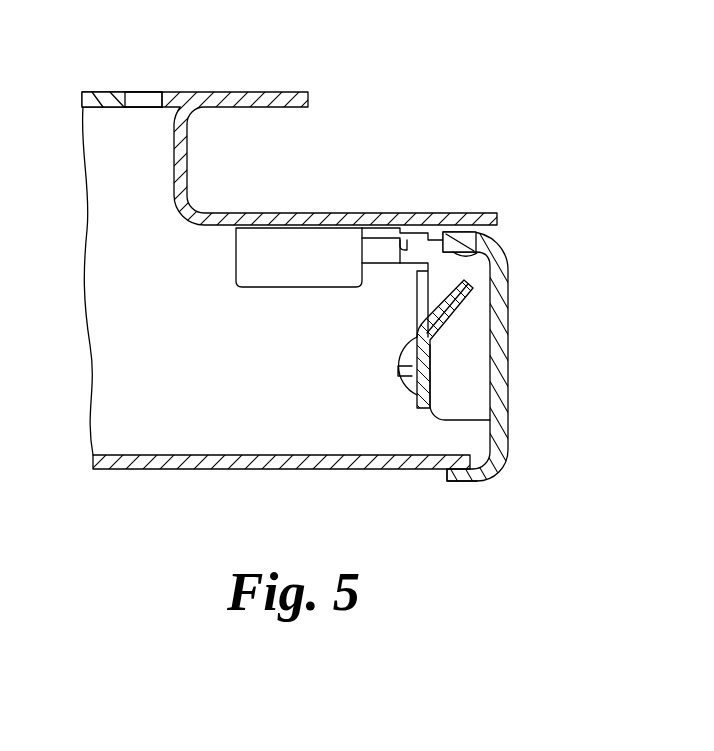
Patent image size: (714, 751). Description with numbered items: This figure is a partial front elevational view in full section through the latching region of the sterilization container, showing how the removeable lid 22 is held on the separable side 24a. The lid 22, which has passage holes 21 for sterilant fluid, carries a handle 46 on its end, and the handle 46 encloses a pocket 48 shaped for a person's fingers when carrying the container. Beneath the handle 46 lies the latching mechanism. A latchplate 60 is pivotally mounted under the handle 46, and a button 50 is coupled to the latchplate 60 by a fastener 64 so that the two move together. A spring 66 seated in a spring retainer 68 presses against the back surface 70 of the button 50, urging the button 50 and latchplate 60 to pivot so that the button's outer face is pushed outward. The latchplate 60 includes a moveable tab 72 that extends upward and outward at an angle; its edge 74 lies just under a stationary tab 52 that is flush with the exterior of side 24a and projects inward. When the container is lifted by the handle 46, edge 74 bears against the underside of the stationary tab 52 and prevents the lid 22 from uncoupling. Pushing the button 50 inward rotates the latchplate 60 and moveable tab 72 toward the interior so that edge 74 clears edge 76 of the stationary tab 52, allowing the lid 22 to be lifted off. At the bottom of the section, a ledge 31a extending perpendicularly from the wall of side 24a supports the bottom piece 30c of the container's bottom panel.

The passage holes 21 is at (159, 92).
The removeable lid 22 is at (98, 92).
The separable side 24a is at (509, 399).
The bottom piece 30c is at (248, 469).
The ledge 31a is at (445, 469).
The handle 46 is at (267, 97).
The pocket 48 is at (238, 167).
The button 50 is at (447, 377).
The stationary tab 52 is at (500, 239).
The latchplate 60 is at (417, 407).
The fastener 64 is at (399, 354).
The spring 66 is at (377, 263).
The spring retainer 68 is at (236, 257).
The back surface 70 is at (407, 243).
The moveable tab 72 is at (468, 287).
The edge 74 is at (474, 282).
The edge 76 is at (440, 242).